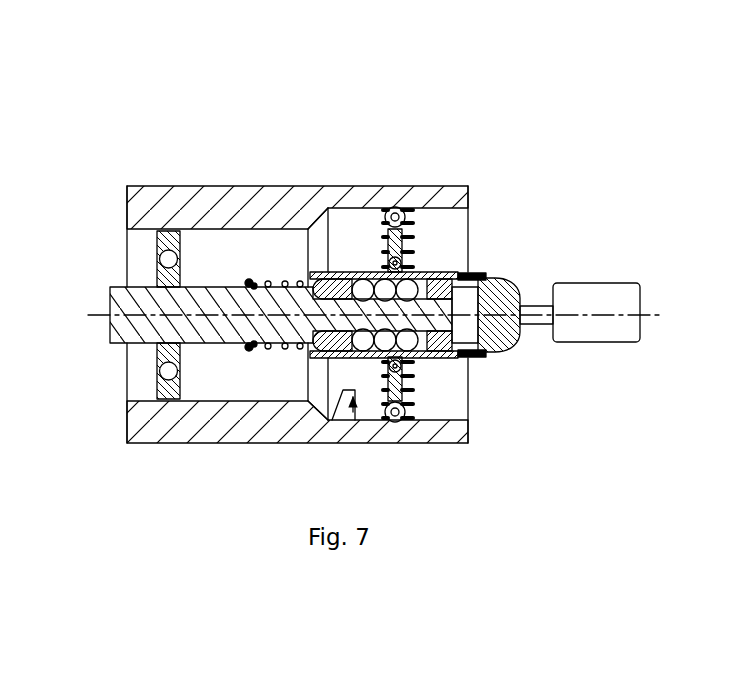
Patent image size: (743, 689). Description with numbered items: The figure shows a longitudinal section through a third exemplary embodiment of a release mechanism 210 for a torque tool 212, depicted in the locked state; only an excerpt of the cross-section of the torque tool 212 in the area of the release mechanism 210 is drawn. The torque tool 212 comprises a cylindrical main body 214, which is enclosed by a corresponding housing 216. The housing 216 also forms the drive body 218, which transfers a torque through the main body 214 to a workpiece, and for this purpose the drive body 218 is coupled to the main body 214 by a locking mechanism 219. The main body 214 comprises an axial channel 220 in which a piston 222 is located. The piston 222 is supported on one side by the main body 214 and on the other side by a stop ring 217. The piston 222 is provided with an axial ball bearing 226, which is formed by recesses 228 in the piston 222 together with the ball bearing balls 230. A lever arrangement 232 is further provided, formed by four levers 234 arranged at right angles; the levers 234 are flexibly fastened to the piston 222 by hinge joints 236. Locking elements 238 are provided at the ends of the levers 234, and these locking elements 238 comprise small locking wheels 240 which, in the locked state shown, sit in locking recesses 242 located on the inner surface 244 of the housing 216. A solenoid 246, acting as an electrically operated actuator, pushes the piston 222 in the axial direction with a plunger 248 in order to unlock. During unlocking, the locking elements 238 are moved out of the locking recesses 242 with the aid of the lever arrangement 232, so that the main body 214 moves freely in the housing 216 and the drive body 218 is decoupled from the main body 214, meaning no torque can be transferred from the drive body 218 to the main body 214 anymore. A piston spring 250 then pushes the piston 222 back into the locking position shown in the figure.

The release mechanism 210 is at (206, 104).
The torque tool 212 is at (452, 113).
The cylindrical main body 214 is at (294, 392).
The housing 216 is at (256, 216).
The stop ring 217 is at (121, 170).
The drive body 218 is at (332, 427).
The locking mechanism 219 is at (501, 424).
The axial channel 220 is at (513, 295).
The piston 222 is at (148, 364).
The axial ball bearing 226 is at (346, 208).
The recesses 228 is at (361, 229).
The ball bearing balls 230 is at (337, 160).
The lever arrangement 232 is at (474, 300).
The levers 234 is at (466, 291).
The hinge joints 236 is at (432, 475).
The locking elements 238 is at (462, 485).
The locking wheels 240 is at (455, 274).
The locking recesses 242 is at (492, 399).
The inner surface 244 is at (256, 370).
The solenoid 246 is at (629, 294).
The plunger 248 is at (573, 344).
The piston spring 250 is at (238, 248).